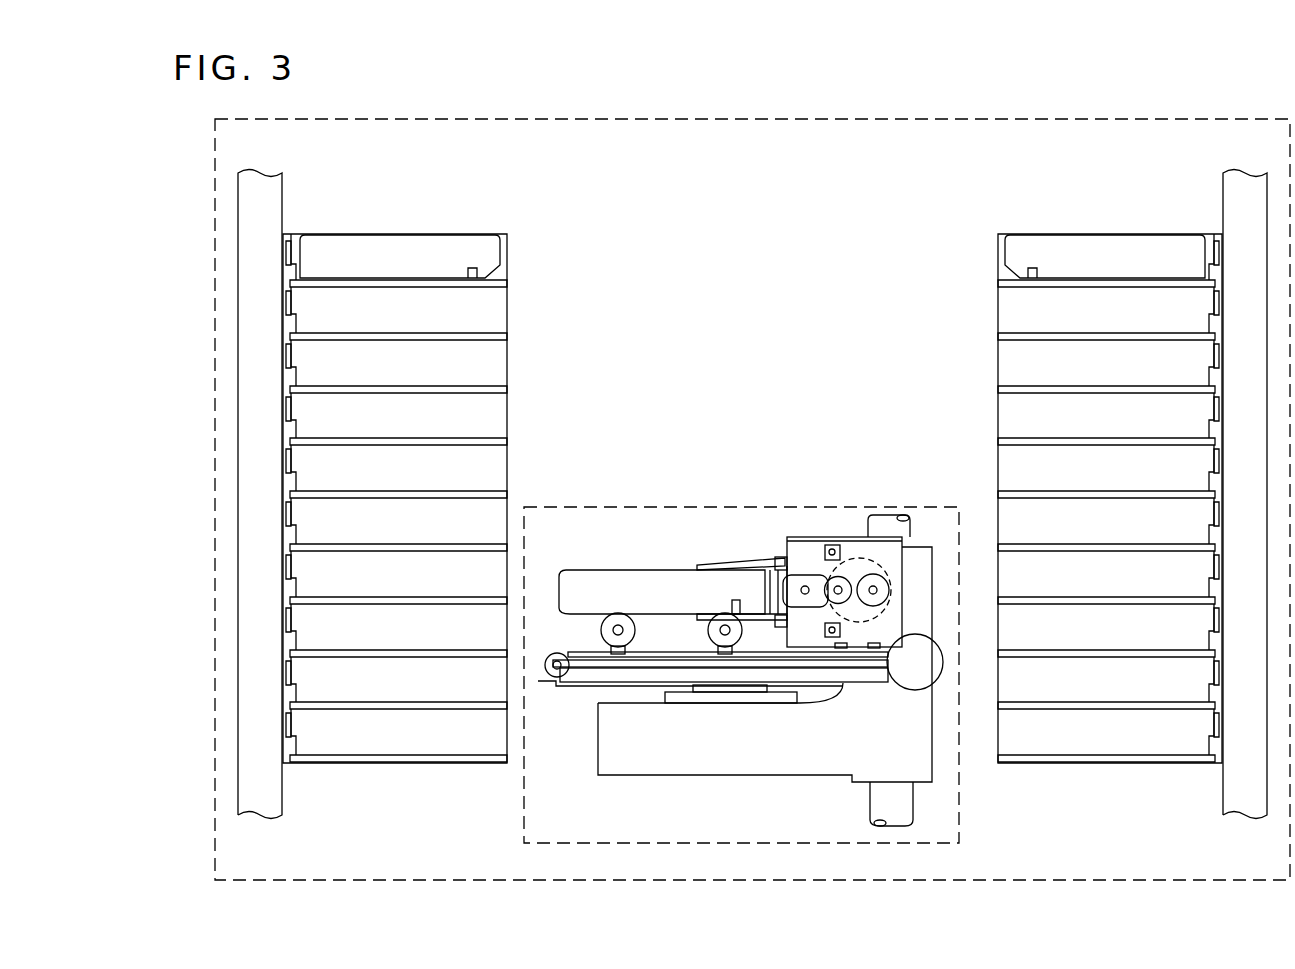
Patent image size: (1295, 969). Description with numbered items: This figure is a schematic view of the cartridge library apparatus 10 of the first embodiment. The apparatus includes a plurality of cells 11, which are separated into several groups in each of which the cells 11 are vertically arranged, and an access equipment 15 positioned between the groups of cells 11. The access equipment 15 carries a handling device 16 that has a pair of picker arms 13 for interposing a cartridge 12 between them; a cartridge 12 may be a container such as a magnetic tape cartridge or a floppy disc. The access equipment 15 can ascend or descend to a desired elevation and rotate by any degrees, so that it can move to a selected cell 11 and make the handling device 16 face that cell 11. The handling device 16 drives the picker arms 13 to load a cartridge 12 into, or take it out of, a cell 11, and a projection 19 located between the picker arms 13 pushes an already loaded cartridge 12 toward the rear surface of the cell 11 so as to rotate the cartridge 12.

The cartridge library apparatus 10 is at (1046, 119).
The cell 11 is at (508, 319).
The cartridge 12 is at (393, 258).
The picker arm 13 is at (714, 566).
The access equipment 15 is at (959, 830).
The handling device 16 is at (839, 537).
The projection 19 is at (767, 562).